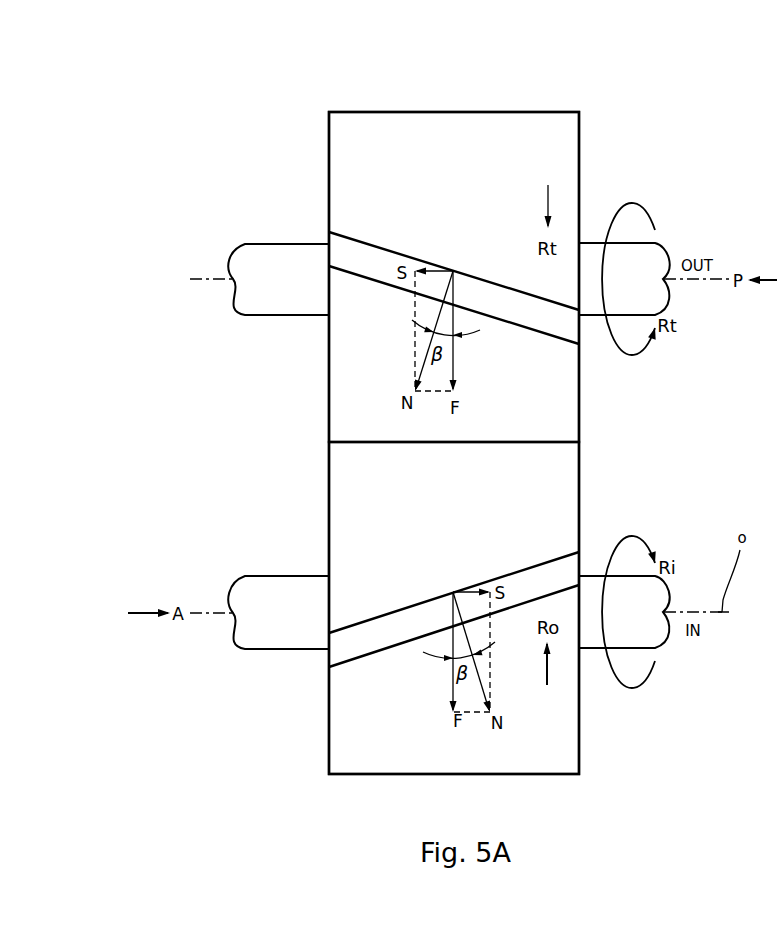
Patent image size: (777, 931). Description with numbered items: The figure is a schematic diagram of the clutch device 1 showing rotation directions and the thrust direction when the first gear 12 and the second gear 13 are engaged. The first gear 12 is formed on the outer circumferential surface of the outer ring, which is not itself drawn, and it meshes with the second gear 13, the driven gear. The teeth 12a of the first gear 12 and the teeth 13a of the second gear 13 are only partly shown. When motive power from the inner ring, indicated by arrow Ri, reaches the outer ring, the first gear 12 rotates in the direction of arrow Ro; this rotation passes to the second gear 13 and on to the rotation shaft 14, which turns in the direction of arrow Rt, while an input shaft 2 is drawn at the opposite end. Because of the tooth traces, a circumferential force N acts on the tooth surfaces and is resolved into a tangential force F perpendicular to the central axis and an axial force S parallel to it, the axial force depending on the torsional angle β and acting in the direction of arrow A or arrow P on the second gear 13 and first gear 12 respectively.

The torque transmission device 1 is at (659, 146).
The input shaft 2 is at (271, 589).
The first gear 12 is at (345, 476).
The teeth of first gear 12a is at (384, 640).
The second gear 13 is at (345, 387).
The teeth of second gear 13a is at (522, 318).
The rotation shaft 14 is at (272, 256).